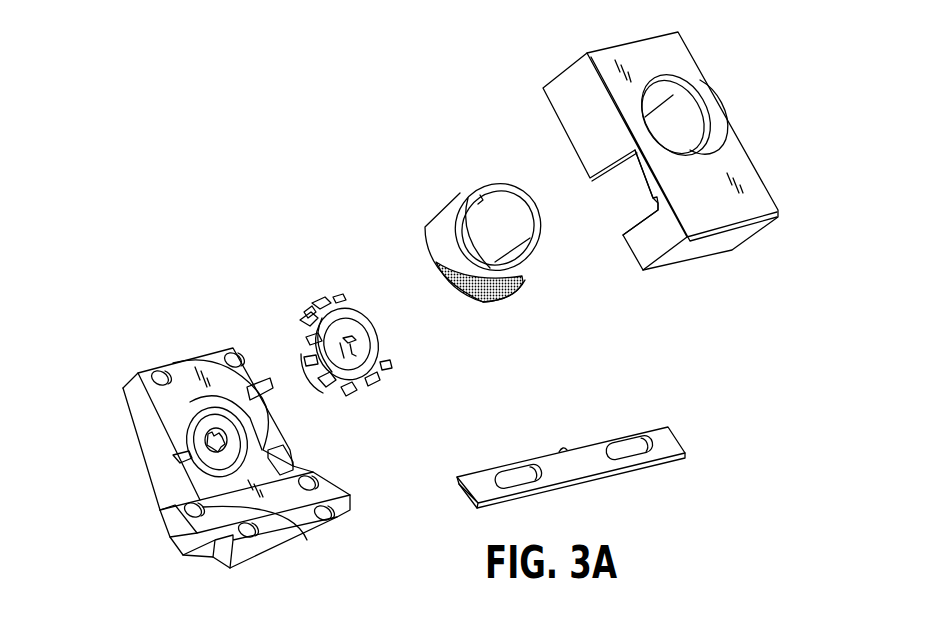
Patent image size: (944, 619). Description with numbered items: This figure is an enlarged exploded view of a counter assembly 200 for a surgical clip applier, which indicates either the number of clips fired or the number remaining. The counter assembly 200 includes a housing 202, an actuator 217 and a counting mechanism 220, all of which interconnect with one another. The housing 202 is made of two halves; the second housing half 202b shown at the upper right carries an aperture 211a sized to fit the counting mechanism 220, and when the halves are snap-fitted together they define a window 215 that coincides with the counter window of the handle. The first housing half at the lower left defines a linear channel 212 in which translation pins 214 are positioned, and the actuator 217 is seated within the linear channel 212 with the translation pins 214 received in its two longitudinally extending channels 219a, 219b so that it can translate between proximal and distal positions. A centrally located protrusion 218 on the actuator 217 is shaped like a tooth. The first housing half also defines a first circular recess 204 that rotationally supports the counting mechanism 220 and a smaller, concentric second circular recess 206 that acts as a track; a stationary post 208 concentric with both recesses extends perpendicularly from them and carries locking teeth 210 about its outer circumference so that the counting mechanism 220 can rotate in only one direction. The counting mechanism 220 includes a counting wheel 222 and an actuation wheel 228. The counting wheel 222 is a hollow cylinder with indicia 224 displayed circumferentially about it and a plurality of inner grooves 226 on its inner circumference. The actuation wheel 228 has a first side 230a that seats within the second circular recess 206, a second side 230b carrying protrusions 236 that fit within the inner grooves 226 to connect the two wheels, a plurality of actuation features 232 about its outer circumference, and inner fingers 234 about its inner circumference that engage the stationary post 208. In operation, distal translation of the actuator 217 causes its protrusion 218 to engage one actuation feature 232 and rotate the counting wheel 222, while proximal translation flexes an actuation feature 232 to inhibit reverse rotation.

The counter assembly 200 is at (178, 164).
The housing 202 is at (710, 45).
The second housing half 202b is at (702, 72).
The first circular recess 204 is at (193, 403).
The second circular recess 206 is at (213, 413).
The stationary post 208 is at (217, 410).
The locking teeth 210 is at (197, 507).
The aperture 211a is at (685, 118).
The linear channel 212 is at (218, 515).
The translation pins 214 is at (318, 541).
The window 215 is at (637, 212).
The actuator 217 is at (655, 465).
The protrusion 218 is at (563, 448).
The channel 219a is at (513, 474).
The channel 219b is at (622, 442).
The counting mechanism 220 is at (573, 268).
The counting wheel 222 is at (447, 210).
The indicia 224 is at (507, 292).
The inner grooves 226 is at (480, 187).
The actuation wheel 228 is at (307, 290).
The first side 230a is at (325, 380).
The second side 230b is at (373, 333).
The actuation features 232 is at (300, 330).
The inner fingers 234 is at (348, 323).
The protrusions 236 is at (307, 317).